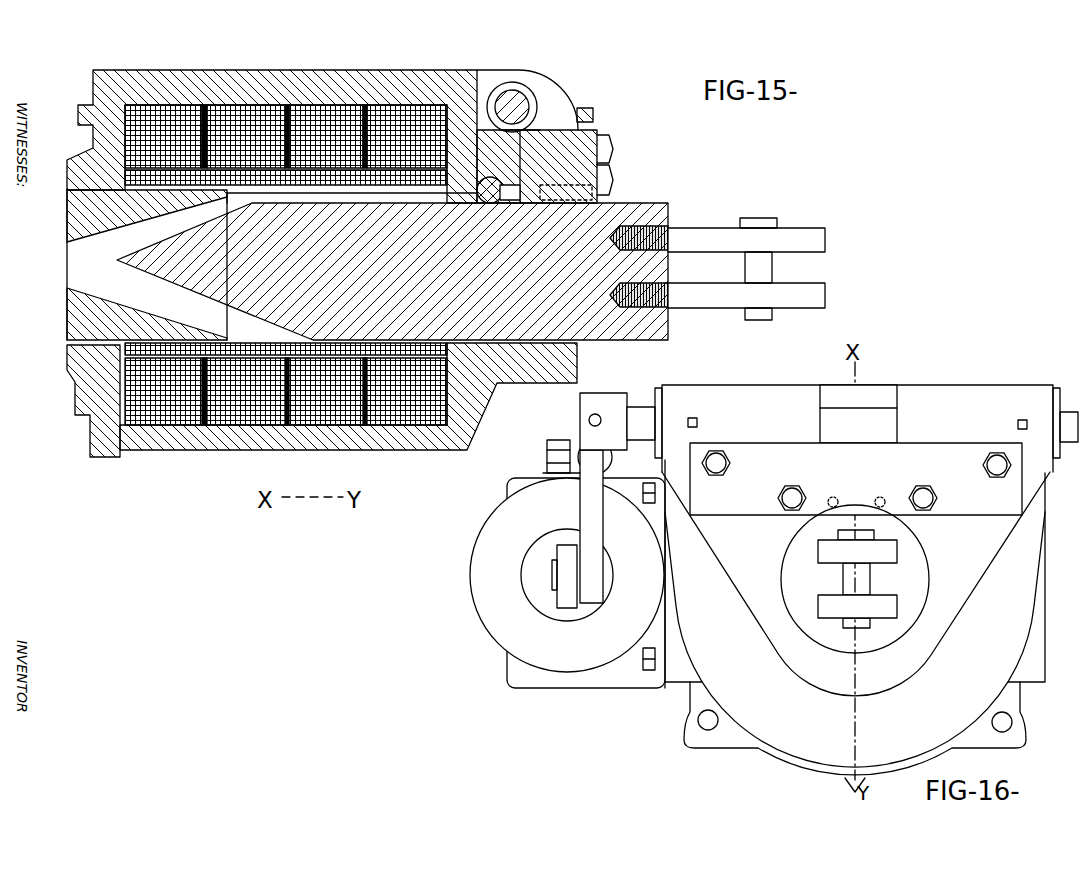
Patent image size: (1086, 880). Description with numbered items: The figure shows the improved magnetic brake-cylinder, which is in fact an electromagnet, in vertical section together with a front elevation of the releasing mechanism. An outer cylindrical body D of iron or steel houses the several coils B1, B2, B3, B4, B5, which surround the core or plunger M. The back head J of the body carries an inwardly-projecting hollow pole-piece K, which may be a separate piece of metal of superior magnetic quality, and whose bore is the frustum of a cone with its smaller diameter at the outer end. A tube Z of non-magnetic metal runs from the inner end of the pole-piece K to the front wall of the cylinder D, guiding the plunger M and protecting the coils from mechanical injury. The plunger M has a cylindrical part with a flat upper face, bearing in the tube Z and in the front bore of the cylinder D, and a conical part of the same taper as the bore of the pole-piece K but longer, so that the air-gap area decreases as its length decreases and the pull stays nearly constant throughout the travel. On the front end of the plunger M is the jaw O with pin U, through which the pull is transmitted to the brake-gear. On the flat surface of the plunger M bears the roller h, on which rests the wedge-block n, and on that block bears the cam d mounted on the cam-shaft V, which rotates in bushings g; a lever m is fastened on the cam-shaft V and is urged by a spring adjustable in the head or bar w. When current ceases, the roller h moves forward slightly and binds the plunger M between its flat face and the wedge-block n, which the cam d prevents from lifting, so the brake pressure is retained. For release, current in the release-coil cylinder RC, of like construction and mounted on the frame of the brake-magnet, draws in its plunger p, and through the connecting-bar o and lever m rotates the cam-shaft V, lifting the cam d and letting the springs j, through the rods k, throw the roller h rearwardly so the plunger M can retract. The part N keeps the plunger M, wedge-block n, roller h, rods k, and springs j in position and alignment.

In FIG. 15, the inner coil B1 is at (125, 177).
In FIG. 15, the coil section B2 is at (173, 110).
In FIG. 15, the coil section B3 is at (248, 110).
In FIG. 15, the coil section B4 is at (327, 110).
In FIG. 15, the coil section B5 is at (405, 110).
In FIG. 15, the outer cylindrical body D is at (478, 70).
In FIG. 16, the outer cylindrical body D is at (780, 750).
In FIG. 15, the bushings g is at (518, 88).
In FIG. 16, the bushings g is at (656, 456).
In FIG. 15, the cam d is at (522, 135).
In FIG. 16, the cam d is at (872, 408).
In FIG. 15, the wedge-block n is at (527, 140).
In FIG. 15, the retaining part N is at (598, 132).
In FIG. 16, the retaining part N is at (764, 503).
In FIG. 15, the springs j is at (577, 185).
In FIG. 16, the springs j is at (840, 498).
In FIG. 15, the plunger M is at (628, 203).
In FIG. 16, the plunger M is at (800, 615).
In FIG. 15, the pin U is at (760, 218).
In FIG. 16, the pin U is at (843, 577).
In FIG. 15, the jaw O is at (825, 290).
In FIG. 16, the jaw O is at (900, 603).
In FIG. 15, the roller h is at (489, 205).
In FIG. 15, the rods k is at (509, 200).
In FIG. 15, the tube Z is at (268, 192).
In FIG. 15, the pole-piece K is at (67, 315).
In FIG. 15, the back head J is at (72, 382).
In FIG. 16, the cam-shaft V is at (637, 402).
In FIG. 16, the head or bar w is at (547, 455).
In FIG. 16, the lever m is at (580, 495).
In FIG. 16, the release-coil cylinder RC is at (470, 580).
In FIG. 16, the plunger p is at (523, 590).
In FIG. 16, the connecting-bar o is at (556, 600).